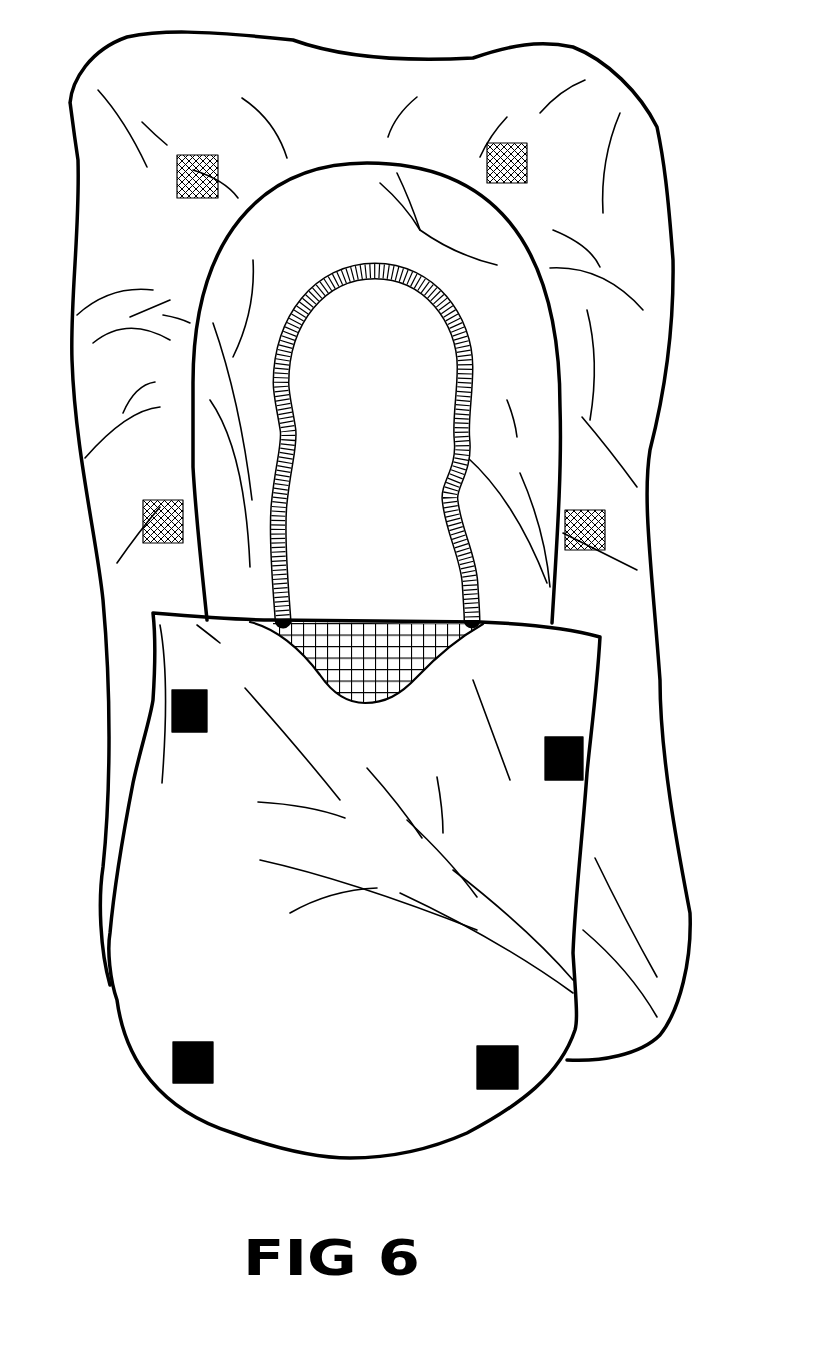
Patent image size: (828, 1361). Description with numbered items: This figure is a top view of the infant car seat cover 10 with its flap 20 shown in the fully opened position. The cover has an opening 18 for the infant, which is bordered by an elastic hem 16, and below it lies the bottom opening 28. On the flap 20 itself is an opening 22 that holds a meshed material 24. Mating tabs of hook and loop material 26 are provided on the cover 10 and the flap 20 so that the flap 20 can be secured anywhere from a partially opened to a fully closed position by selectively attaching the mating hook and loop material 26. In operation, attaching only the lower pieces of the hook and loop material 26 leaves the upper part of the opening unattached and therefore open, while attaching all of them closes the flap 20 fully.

The infant car seat cover 10 is at (140, 55).
The opening 18 is at (540, 247).
The elastic hem 16 is at (453, 337).
The bottom opening 28 is at (408, 516).
The opening 22 is at (340, 680).
The meshed material 24 is at (367, 683).
The mating tabs of hook and loop material 26 is at (587, 737).
The flap 20 is at (418, 1120).